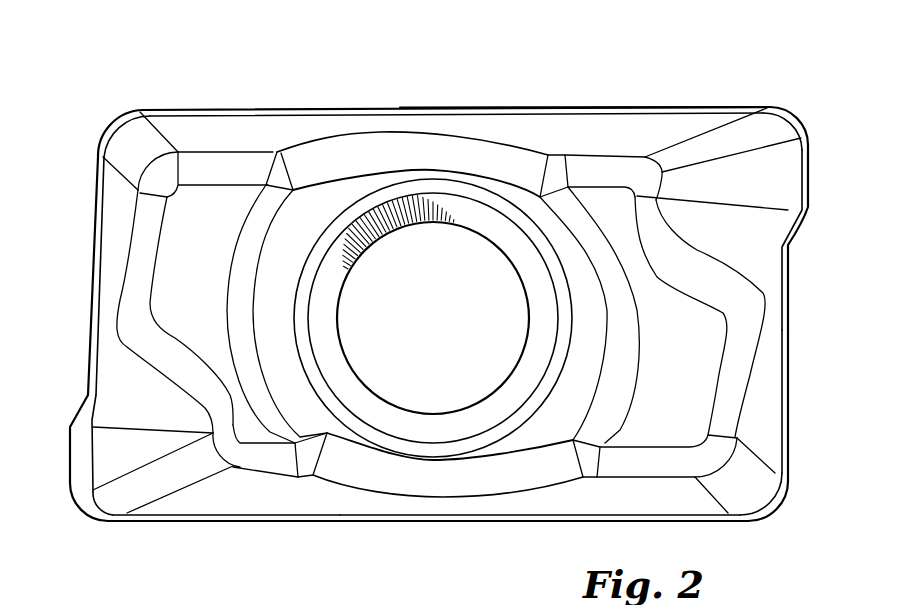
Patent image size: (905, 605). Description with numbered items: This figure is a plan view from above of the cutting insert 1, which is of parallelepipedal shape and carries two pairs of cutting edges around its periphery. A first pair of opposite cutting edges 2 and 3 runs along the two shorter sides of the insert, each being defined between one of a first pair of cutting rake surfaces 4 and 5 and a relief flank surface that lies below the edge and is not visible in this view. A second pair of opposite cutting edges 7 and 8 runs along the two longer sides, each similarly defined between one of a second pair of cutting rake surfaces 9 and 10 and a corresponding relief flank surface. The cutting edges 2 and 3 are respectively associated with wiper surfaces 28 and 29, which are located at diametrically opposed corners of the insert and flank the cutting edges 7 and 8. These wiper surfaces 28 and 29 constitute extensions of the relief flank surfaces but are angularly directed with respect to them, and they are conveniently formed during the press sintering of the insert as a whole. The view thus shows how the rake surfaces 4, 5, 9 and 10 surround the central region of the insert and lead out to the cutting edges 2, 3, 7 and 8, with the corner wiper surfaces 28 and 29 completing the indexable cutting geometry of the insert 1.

The cutting insert 1 is at (433, 92).
The cutting edge 2 is at (87, 313).
The cutting edge 3 is at (792, 322).
The cutting rake surface 4 is at (100, 398).
The cutting rake surface 5 is at (765, 430).
The cutting edge 7 is at (415, 523).
The cutting edge 8 is at (553, 107).
The cutting rake surface 9 is at (332, 505).
The cutting rake surface 10 is at (635, 108).
The wiper surface 28 is at (747, 513).
The wiper surface 29 is at (137, 108).